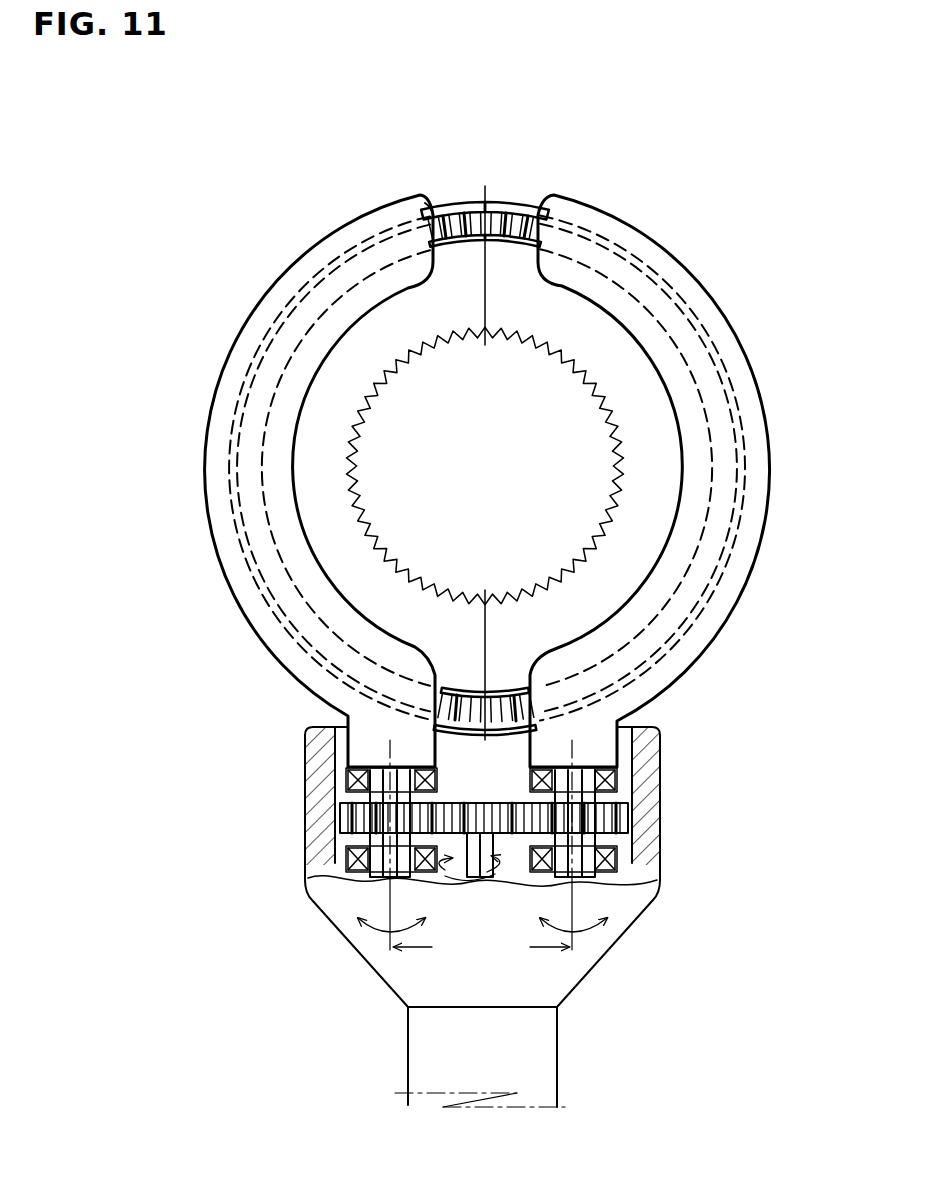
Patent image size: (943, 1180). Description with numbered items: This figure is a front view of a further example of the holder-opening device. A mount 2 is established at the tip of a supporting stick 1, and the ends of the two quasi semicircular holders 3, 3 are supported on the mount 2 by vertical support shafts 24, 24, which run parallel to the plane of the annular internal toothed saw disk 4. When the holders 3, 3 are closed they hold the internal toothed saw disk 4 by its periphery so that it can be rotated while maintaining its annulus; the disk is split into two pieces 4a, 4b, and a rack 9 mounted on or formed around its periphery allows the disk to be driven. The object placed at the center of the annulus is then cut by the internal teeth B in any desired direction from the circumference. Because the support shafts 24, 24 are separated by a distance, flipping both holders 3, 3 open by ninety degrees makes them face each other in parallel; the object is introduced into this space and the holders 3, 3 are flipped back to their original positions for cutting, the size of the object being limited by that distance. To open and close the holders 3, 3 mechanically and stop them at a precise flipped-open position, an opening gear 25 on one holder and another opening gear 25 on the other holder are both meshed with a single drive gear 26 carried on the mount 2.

The supporting stick 1 is at (438, 1057).
The mount 2 is at (398, 960).
The quasi semicircular holder 3 is at (210, 463).
The internal toothed saw disk 4 is at (504, 393).
The gear segment half 4a is at (458, 250).
The gear segment half 4b is at (518, 265).
The rack 9 is at (437, 216).
The internal teeth B is at (373, 407).
The support shaft 24 is at (390, 843).
The opening gear 25 is at (345, 810).
The drive gear 26 is at (477, 800).